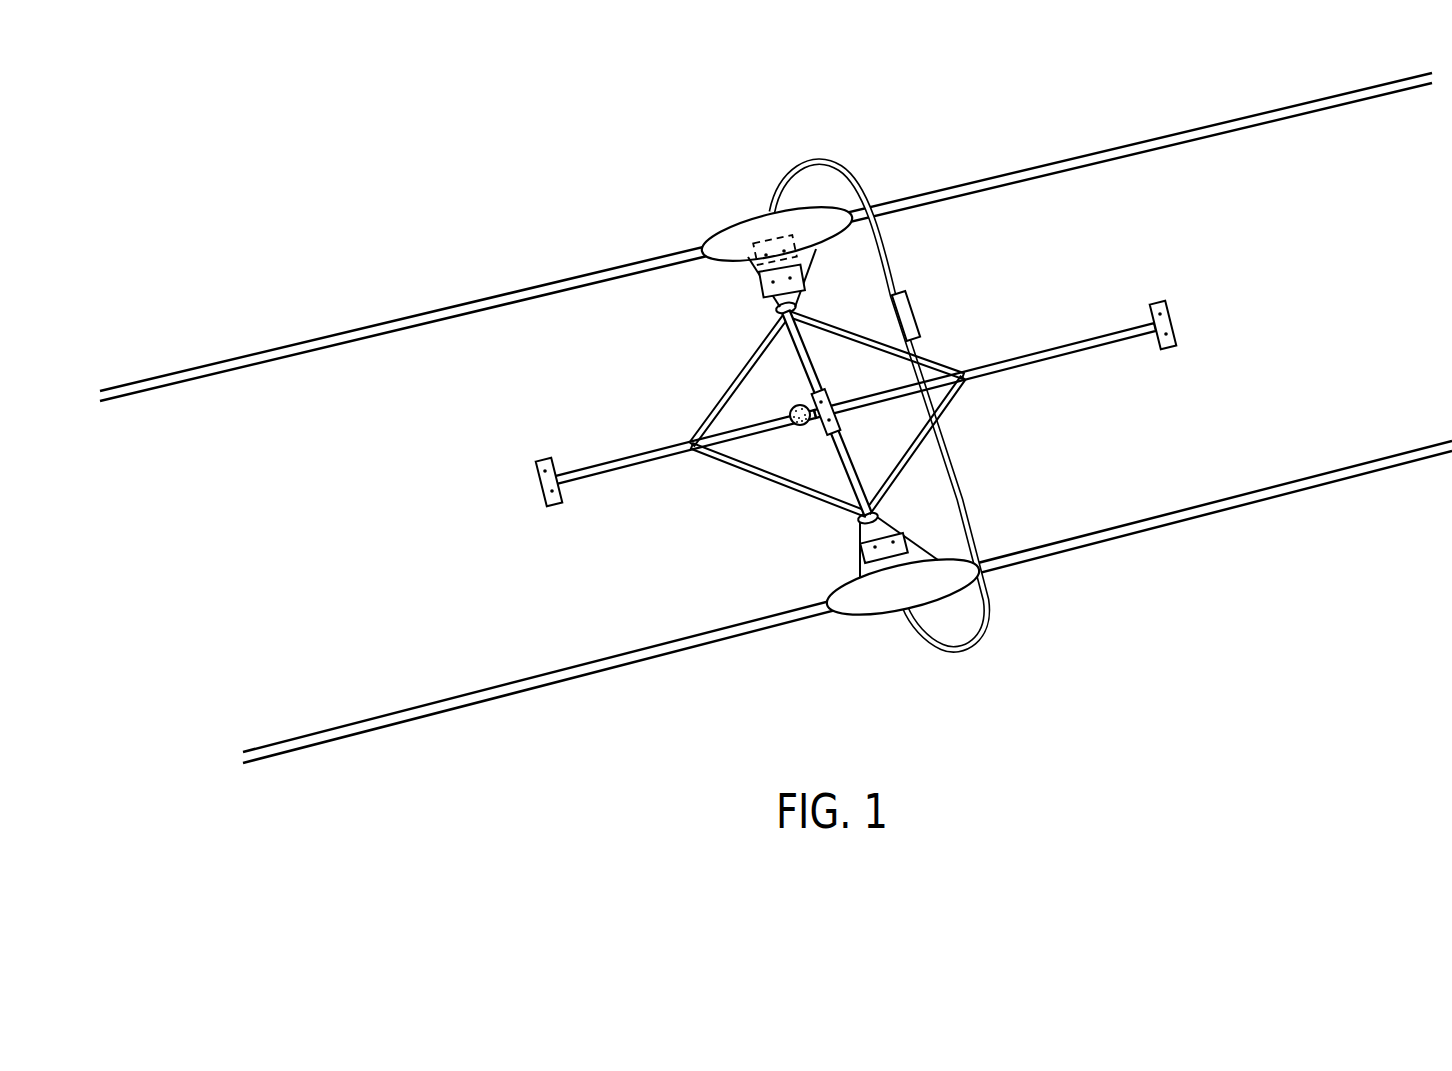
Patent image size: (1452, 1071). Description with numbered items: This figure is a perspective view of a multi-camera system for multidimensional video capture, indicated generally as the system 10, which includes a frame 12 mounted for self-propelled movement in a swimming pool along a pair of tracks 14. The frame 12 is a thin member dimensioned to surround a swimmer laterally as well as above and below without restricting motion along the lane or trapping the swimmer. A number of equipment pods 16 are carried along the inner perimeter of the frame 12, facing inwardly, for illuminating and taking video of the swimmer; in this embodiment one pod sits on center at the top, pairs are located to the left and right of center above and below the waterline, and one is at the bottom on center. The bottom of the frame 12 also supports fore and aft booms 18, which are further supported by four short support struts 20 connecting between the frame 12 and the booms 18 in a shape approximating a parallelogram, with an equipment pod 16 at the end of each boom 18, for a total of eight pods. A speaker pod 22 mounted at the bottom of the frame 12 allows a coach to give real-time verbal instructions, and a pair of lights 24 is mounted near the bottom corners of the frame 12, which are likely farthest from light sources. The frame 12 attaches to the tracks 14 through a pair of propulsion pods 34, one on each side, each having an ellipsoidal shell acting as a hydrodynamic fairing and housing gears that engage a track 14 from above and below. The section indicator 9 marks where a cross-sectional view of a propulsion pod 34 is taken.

The section line indicator 9 is at (863, 180).
The multi-camera system for multidimensional video capture 10 is at (436, 220).
The frame 12 is at (898, 256).
The tracks 14 is at (318, 336).
The equipment pods 16 is at (780, 240).
The booms 18 is at (1080, 350).
The support struts 20 is at (846, 332).
The speaker pod 22 is at (803, 430).
The lights 24 is at (778, 311).
The propulsion pods 34 is at (723, 247).